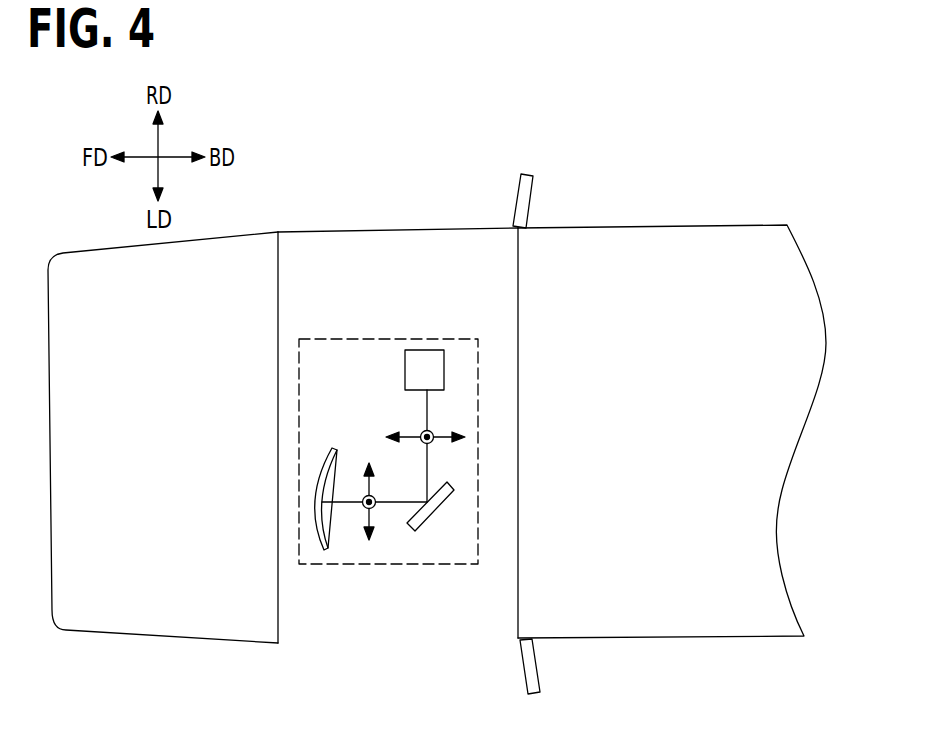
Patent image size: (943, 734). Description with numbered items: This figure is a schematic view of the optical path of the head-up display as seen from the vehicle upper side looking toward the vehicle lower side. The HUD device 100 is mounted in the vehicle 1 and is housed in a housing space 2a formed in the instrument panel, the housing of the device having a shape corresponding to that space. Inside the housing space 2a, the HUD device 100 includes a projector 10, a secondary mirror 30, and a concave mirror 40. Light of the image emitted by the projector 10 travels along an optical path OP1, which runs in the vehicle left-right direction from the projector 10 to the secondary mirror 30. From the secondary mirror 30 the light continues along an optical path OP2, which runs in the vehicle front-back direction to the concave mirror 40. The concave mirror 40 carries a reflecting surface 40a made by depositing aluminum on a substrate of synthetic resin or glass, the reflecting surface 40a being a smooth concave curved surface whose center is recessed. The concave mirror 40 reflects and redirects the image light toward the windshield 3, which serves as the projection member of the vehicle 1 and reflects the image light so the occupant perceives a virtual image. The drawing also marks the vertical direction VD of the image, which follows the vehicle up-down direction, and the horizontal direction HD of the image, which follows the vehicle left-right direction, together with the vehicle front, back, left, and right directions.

The vehicle 1 is at (174, 638).
The windshield 3 is at (349, 244).
The housing space 2a is at (335, 338).
The projector 10 is at (427, 350).
The secondary mirror 30 is at (440, 508).
The concave mirror 40 is at (320, 547).
The reflecting surface 40a is at (328, 534).
The HUD device 100 is at (462, 330).
The horizontal direction of the image HD is at (375, 506).
The vertical direction of the image VD is at (384, 503).
The optical path OP1 is at (428, 466).
The optical path OP2 is at (352, 502).